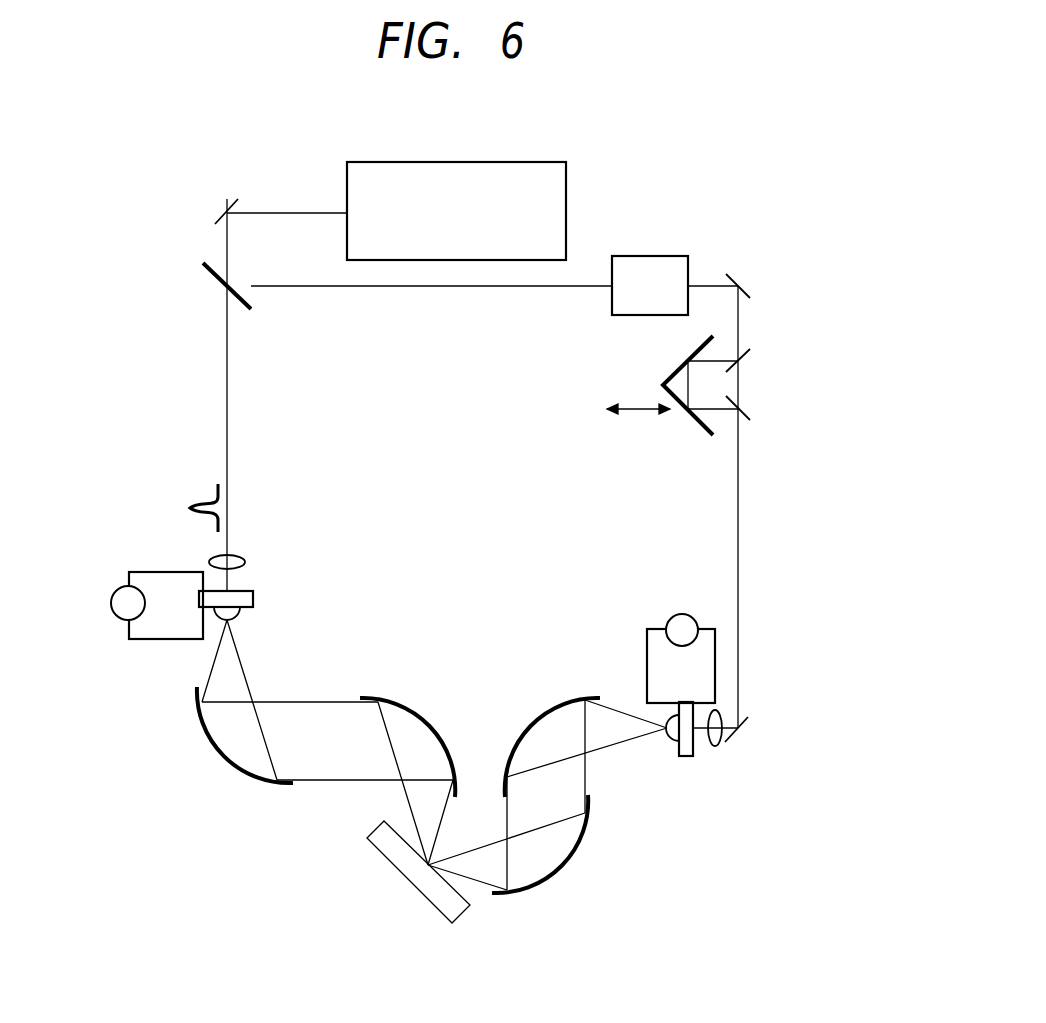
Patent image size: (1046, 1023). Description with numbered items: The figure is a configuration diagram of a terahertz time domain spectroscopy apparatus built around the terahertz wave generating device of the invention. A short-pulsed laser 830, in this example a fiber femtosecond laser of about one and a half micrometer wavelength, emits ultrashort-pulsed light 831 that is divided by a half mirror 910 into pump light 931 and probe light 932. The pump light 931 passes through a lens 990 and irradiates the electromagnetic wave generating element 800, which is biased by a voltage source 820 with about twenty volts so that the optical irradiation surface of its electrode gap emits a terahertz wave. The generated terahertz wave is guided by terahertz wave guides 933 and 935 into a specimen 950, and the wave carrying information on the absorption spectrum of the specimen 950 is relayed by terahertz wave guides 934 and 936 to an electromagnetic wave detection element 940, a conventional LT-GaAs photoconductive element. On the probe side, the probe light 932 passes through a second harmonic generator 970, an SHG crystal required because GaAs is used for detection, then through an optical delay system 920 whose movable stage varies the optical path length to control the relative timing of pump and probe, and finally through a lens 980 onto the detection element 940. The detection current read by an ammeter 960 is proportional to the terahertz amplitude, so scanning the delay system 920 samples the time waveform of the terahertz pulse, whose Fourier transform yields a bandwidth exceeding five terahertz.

The electromagnetic wave generating element 800 is at (254, 598).
The voltage source 820 is at (112, 598).
The short-pulsed laser 830 is at (528, 170).
The ultrashort-pulsed light 831 is at (187, 507).
The half mirror 910 is at (205, 286).
The optical delay system 920 is at (688, 362).
The pump light 931 is at (227, 432).
The probe light 932 is at (738, 453).
The terahertz wave guide 933 is at (232, 765).
The terahertz wave guide 934 is at (550, 710).
The terahertz wave guide 935 is at (413, 712).
The terahertz wave guide 936 is at (552, 875).
The electromagnetic wave detection element 940 is at (686, 758).
The specimen 950 is at (393, 868).
The ammeter 960 is at (680, 613).
The second harmonic generator 970 is at (648, 265).
The lens 980 is at (722, 712).
The lens 990 is at (240, 553).